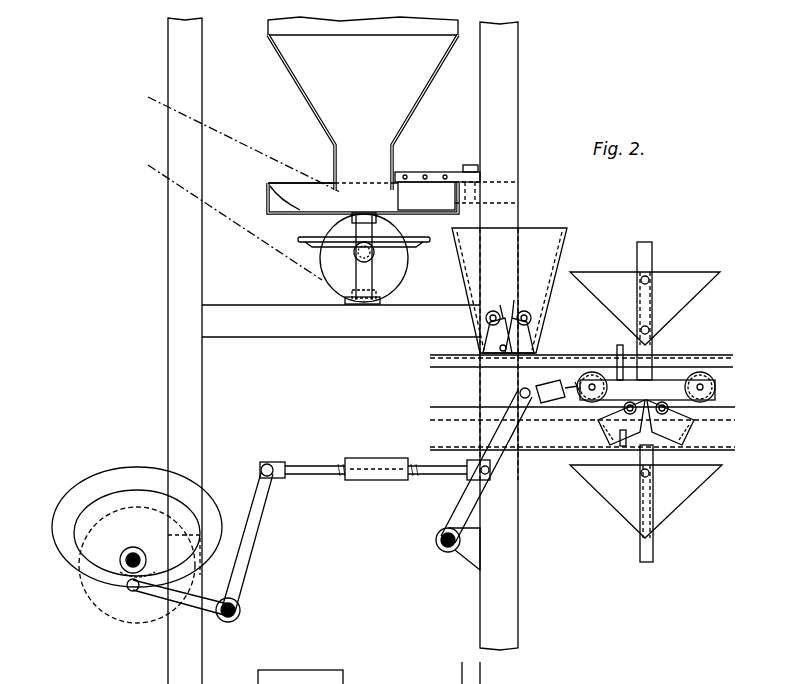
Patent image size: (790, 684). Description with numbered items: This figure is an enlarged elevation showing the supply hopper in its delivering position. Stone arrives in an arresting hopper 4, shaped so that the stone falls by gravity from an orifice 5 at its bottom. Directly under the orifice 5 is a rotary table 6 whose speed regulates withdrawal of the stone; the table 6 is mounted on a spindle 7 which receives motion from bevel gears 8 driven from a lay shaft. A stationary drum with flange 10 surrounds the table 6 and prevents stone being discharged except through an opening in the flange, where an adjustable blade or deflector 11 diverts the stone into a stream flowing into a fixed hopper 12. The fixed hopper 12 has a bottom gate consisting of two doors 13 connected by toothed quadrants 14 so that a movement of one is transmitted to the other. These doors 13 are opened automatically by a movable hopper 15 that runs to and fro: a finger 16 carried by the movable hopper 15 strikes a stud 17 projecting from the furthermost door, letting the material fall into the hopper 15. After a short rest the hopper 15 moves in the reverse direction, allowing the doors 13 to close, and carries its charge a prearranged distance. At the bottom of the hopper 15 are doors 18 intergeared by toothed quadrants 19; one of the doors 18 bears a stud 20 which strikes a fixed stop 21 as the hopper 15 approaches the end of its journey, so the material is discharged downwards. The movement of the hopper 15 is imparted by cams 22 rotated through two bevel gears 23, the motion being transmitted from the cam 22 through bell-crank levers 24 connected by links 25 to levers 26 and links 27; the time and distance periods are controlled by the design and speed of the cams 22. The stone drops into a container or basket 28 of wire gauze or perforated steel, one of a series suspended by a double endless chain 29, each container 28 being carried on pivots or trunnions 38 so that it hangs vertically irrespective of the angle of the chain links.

The arresting hopper 4 is at (312, 78).
The orifice 5 is at (370, 162).
The rotary table 6 is at (268, 184).
The spindle 7 is at (366, 283).
The bevel gears 8 is at (372, 254).
The stationary drum with flange 10 is at (268, 207).
The adjustable blade or deflector 11 is at (435, 197).
The fixed hopper 12 is at (545, 240).
The doors 13 is at (484, 350).
The toothed quadrants 14 is at (512, 300).
The movable hopper 15 is at (665, 375).
The finger 16 is at (617, 355).
The stud 17 is at (506, 370).
The doors 18 is at (600, 430).
The toothed quadrants 19 is at (646, 396).
The stud 20 is at (600, 440).
The fixed stop 21 is at (618, 448).
The cams 22 is at (125, 480).
The bevel gears 23 is at (105, 618).
The bell-crank levers 24 is at (250, 546).
The links 25 is at (318, 470).
The levers 26 is at (460, 520).
The links 27 is at (548, 386).
The container or basket 28 is at (688, 294).
The double endless chain 29 is at (652, 251).
The pivots or trunnions 38 is at (641, 278).